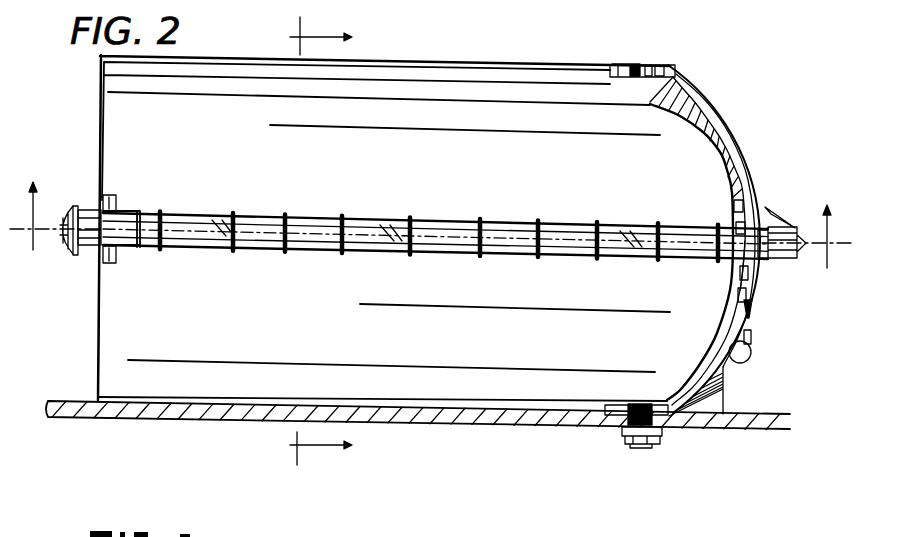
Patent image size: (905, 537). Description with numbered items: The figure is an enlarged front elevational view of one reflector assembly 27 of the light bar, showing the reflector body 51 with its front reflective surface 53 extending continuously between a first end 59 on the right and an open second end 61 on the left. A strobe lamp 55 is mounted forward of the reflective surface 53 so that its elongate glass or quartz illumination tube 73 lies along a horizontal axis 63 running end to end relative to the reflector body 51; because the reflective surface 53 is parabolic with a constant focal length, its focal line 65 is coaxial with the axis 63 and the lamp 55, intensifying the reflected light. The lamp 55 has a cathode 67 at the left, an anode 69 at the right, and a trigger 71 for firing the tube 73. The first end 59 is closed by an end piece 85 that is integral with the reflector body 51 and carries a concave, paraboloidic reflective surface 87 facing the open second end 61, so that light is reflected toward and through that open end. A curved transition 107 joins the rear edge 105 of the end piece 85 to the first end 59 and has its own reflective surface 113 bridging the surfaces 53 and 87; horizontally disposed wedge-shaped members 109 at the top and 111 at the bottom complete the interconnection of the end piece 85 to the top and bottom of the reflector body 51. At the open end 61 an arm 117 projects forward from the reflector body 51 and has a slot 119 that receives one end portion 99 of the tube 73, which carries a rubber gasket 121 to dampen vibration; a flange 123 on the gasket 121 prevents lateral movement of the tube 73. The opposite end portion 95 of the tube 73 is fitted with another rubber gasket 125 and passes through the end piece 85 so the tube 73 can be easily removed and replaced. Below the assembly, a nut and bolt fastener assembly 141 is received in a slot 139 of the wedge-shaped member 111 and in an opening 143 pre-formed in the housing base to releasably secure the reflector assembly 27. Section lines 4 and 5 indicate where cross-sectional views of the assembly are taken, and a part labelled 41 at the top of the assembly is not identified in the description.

The section line 4- 4 is at (306, 244).
The section line 5- 5 is at (430, 231).
The reflector assembly 27 is at (795, 70).
The mounting flange 41 is at (640, 26).
The reflector body 51 is at (478, 58).
The front reflective surface 53 is at (148, 118).
The lamp 55 is at (448, 222).
The first end 59 is at (703, 328).
The second end 61 is at (96, 337).
The horizontal axis 63 is at (598, 193).
The focal line 65 is at (435, 214).
The cathode 67 is at (63, 206).
The anode 69 is at (797, 258).
The trigger 71 is at (236, 214).
The illumination tube 73 is at (325, 252).
The end piece 85 is at (752, 334).
The concave reflective surface 87 is at (742, 215).
The right end portion 95 is at (730, 222).
The end portion 99 is at (152, 212).
The rear edge 105 is at (750, 312).
The curved transition 107 is at (740, 262).
The wedge-shaped member 109 is at (618, 66).
The wedge-shaped member 111 is at (614, 418).
The reflective surface 113 is at (718, 130).
The arm 117 is at (112, 268).
The slot 119 is at (100, 258).
The gasket 121 is at (134, 250).
The flange 123 is at (100, 205).
The rubber gasket 125 is at (790, 210).
The slot 139 is at (656, 67).
The nut and bolt fastener assembly 141 is at (672, 450).
The opening 143 is at (624, 433).